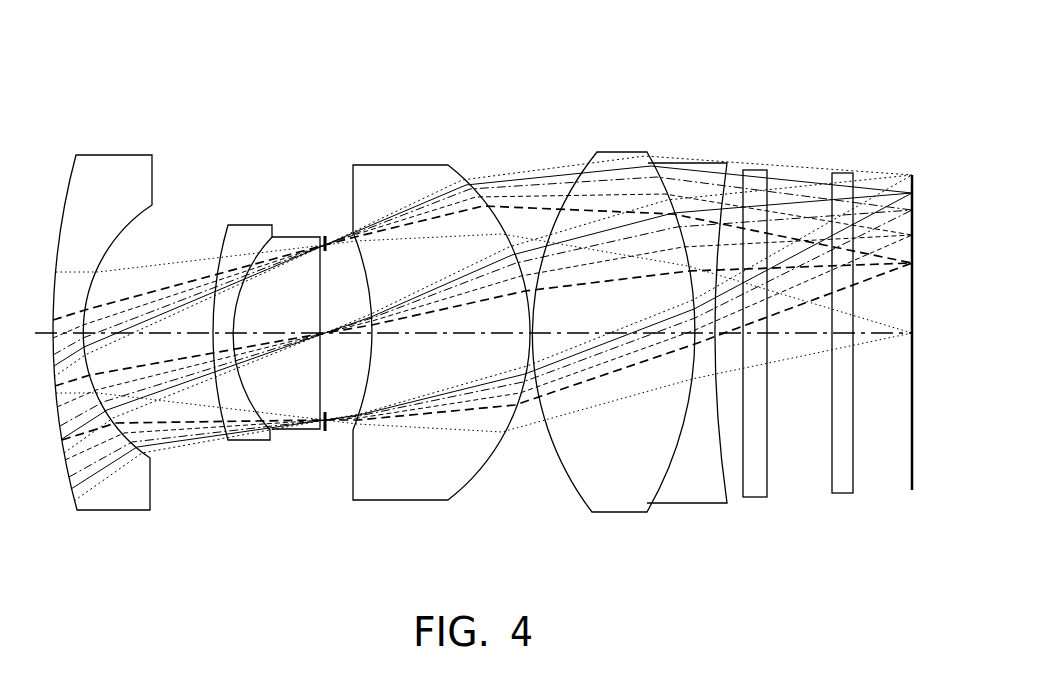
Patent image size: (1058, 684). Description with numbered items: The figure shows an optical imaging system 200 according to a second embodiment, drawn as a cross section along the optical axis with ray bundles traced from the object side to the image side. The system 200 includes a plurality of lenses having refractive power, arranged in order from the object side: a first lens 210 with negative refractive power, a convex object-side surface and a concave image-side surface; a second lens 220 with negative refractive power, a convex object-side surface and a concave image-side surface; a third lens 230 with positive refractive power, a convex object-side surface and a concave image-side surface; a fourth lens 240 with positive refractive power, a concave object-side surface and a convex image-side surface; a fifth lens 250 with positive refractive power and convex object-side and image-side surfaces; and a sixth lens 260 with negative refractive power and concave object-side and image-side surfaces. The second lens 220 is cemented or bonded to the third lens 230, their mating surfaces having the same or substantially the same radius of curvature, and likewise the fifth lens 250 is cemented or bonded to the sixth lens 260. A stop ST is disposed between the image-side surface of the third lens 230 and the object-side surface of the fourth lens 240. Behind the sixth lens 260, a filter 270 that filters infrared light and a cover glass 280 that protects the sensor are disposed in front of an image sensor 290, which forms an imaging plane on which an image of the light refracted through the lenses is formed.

The optical imaging system 200 is at (519, 107).
The first lens 210 is at (103, 503).
The second lens 220 is at (253, 445).
The third lens 230 is at (303, 432).
The stop ST is at (332, 233).
The fourth lens 240 is at (410, 500).
The fifth lens 250 is at (612, 505).
The sixth lens 260 is at (693, 493).
The filter 270 is at (755, 493).
The cover glass 280 is at (843, 485).
The image sensor 290 is at (910, 482).